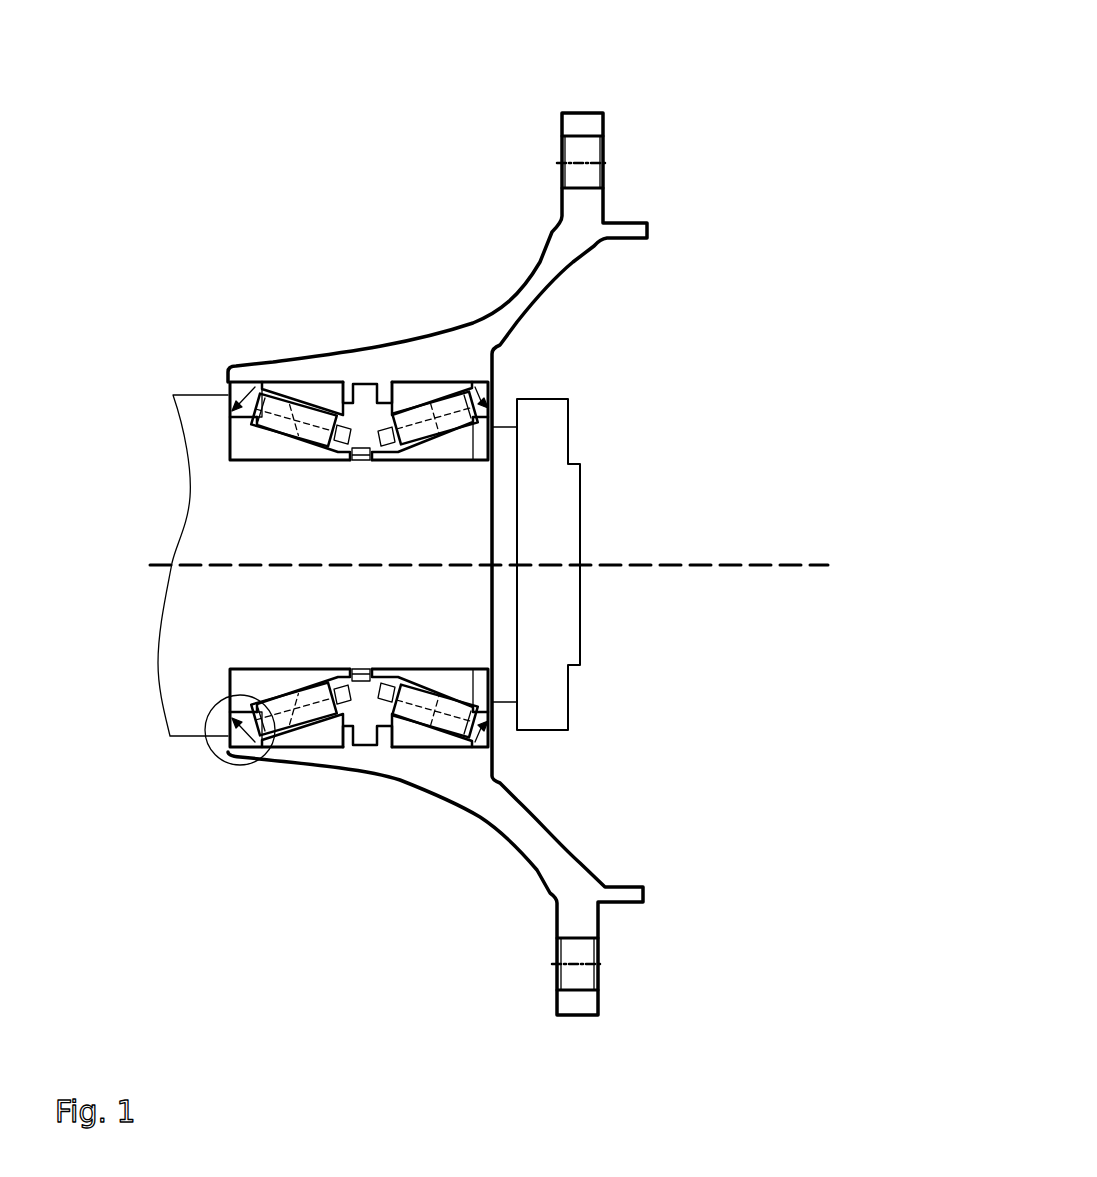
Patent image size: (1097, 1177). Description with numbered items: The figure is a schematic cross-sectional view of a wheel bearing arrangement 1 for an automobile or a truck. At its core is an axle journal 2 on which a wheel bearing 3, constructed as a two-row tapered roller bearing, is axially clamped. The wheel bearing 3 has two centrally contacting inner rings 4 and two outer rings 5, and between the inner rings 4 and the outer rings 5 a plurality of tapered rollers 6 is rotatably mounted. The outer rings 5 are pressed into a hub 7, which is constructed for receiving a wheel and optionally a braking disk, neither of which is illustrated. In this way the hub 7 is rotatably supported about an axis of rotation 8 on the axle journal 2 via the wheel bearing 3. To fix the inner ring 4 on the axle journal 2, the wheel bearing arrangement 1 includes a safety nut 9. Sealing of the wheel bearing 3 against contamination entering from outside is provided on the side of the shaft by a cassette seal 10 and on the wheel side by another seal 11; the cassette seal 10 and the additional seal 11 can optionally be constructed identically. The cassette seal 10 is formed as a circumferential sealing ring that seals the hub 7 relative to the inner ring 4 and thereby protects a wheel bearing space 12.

The wheel bearing arrangement 1 is at (684, 73).
The axle journal 2 is at (200, 427).
The wheel bearing 3 is at (495, 783).
The inner rings 4 is at (475, 443).
The outer rings 5 is at (327, 394).
The tapered rollers 6 is at (253, 388).
The hub 7 is at (528, 286).
The axis of rotation 8 is at (690, 565).
The safety nut 9 is at (540, 430).
The cassette seal 10 is at (212, 750).
The seal 11 is at (485, 738).
The wheel bearing space 12 is at (365, 392).